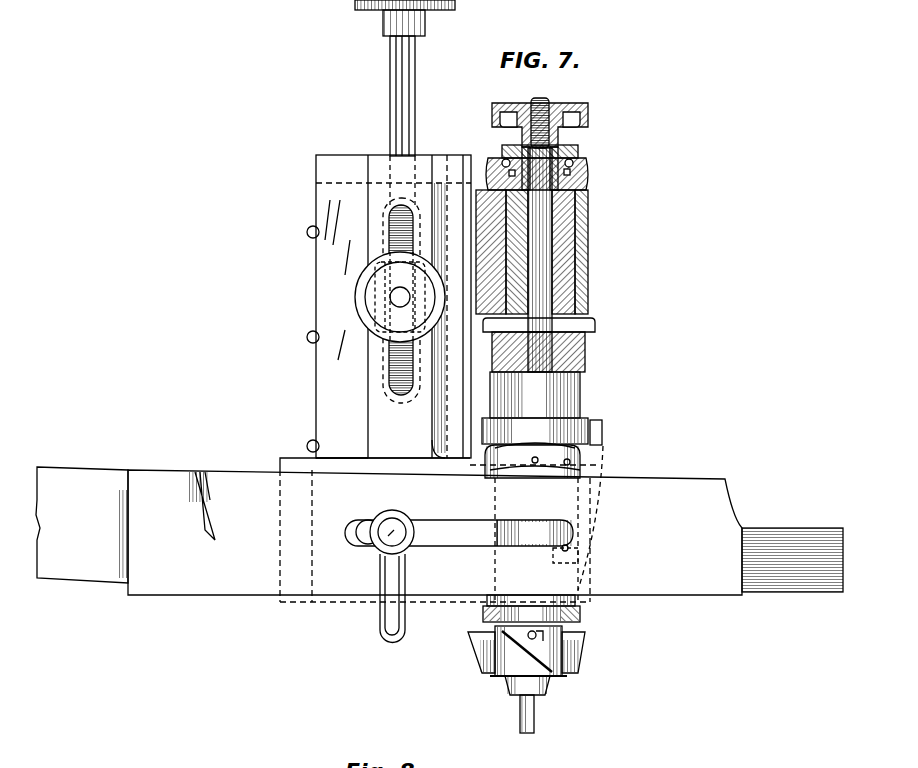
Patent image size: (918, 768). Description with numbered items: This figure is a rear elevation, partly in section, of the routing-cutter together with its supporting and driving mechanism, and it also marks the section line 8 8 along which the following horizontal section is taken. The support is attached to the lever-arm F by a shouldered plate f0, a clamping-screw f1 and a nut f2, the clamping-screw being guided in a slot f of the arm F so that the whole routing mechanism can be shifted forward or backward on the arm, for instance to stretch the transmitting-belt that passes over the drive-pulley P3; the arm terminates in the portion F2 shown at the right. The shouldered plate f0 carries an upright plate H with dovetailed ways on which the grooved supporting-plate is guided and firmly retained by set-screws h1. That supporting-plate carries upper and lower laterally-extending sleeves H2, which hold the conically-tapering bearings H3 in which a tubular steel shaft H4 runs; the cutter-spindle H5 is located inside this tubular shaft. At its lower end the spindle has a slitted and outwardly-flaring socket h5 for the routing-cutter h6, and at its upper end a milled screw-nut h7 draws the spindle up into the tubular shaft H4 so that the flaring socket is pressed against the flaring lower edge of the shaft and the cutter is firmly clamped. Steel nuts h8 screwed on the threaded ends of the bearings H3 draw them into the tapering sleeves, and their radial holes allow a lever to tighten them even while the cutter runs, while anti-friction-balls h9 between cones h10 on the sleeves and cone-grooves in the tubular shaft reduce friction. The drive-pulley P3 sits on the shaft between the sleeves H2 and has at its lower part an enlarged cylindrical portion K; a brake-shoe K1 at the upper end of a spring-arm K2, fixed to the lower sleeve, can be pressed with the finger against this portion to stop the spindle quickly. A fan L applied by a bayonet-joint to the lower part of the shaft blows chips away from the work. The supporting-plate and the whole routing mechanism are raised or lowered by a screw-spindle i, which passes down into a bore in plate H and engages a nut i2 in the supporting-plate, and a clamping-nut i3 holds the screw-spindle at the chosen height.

The screw-spindle i is at (392, 93).
The upright plate H is at (393, 306).
The set-screws h1 is at (297, 336).
The nut i2 is at (352, 347).
The clamping-nut i3 is at (366, 318).
The section line 8 8 is at (390, 297).
The cutter-spindle H5 is at (545, 100).
The milled screw-nut h7 is at (589, 110).
The anti-friction-balls h9 is at (578, 152).
The steel nuts h8 is at (589, 172).
The cones h10 is at (576, 142).
The tubular steel shaft H4 is at (555, 208).
The sleeves H2 is at (588, 242).
The conically-tapering bearings H3 is at (588, 270).
The drive-pulley P3 is at (565, 384).
The enlarged cylindrical portion K is at (590, 430).
The brake-shoe K1 is at (602, 437).
The spring-arm K2 is at (598, 502).
The shouldered plate f0 is at (296, 464).
The lever-arm F is at (389, 531).
The shaft F2 is at (792, 546).
The slot f is at (370, 533).
The clamping-screw f1 is at (397, 526).
The nut f2 is at (384, 548).
The fan L is at (500, 660).
The slitted and outwardly-flaring socket h5 is at (546, 690).
The routing-cutter h6 is at (534, 722).